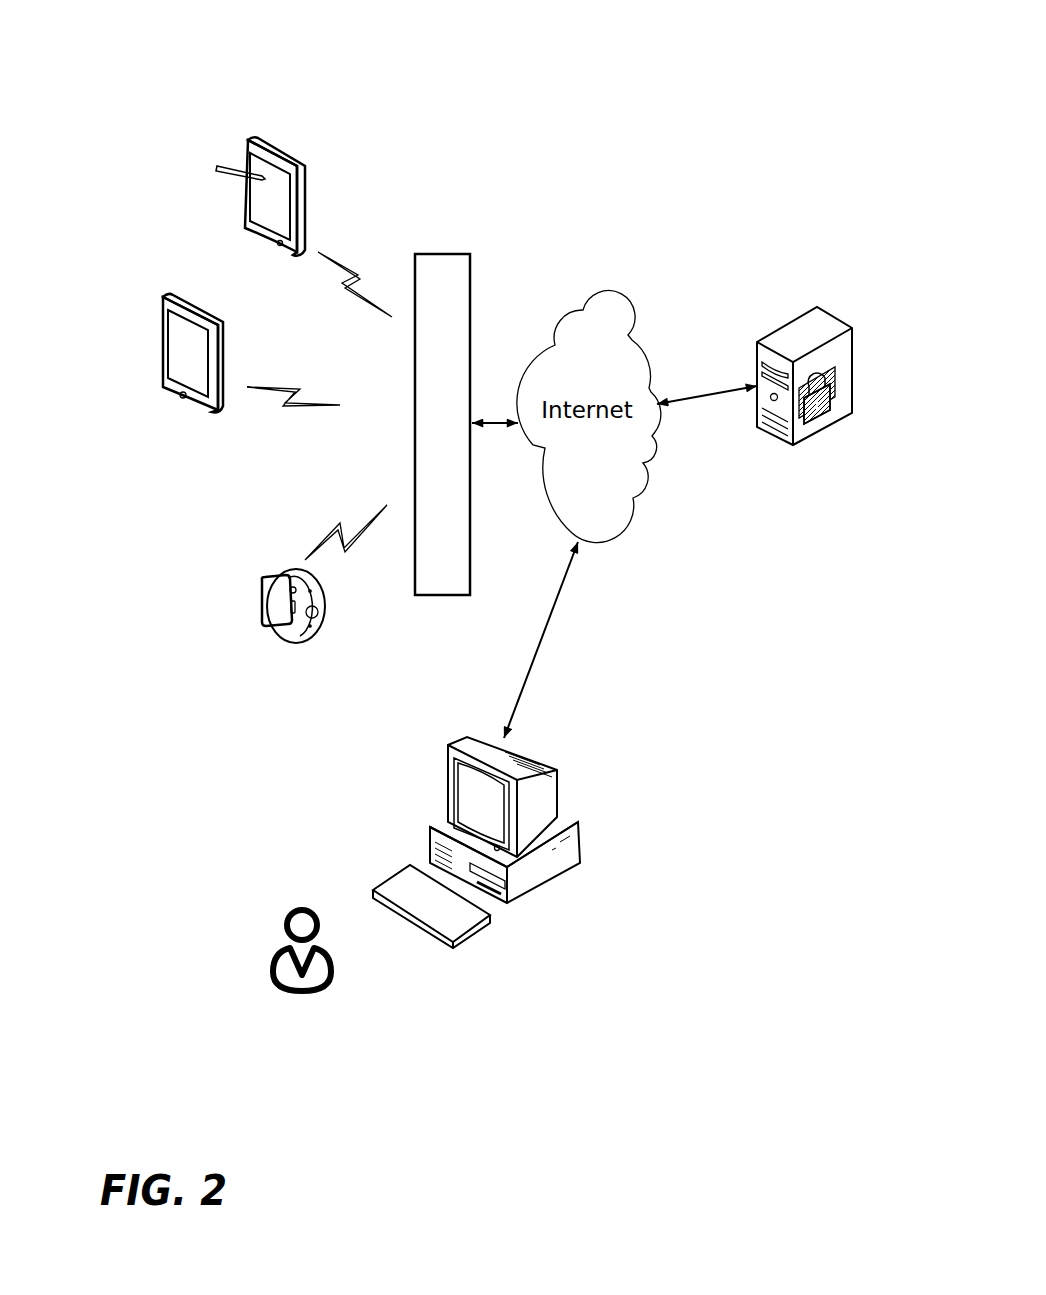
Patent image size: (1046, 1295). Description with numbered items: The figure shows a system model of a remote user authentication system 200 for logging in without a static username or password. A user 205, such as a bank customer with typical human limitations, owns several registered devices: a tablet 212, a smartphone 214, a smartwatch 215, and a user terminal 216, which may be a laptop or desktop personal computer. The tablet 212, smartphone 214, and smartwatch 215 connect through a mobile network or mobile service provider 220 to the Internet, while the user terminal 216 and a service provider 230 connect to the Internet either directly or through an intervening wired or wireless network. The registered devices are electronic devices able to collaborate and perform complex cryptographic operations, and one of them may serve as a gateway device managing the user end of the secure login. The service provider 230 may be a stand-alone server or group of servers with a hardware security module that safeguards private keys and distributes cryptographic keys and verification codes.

The remote authentication system 200 is at (672, 83).
The user 205 is at (280, 915).
The tablet 212 is at (248, 138).
The smartphone 214 is at (158, 320).
The smartwatch 215 is at (272, 570).
The user terminal 216 is at (443, 760).
The mobile network and/or mobile service provider 220 is at (452, 252).
The service provider 230 is at (815, 437).